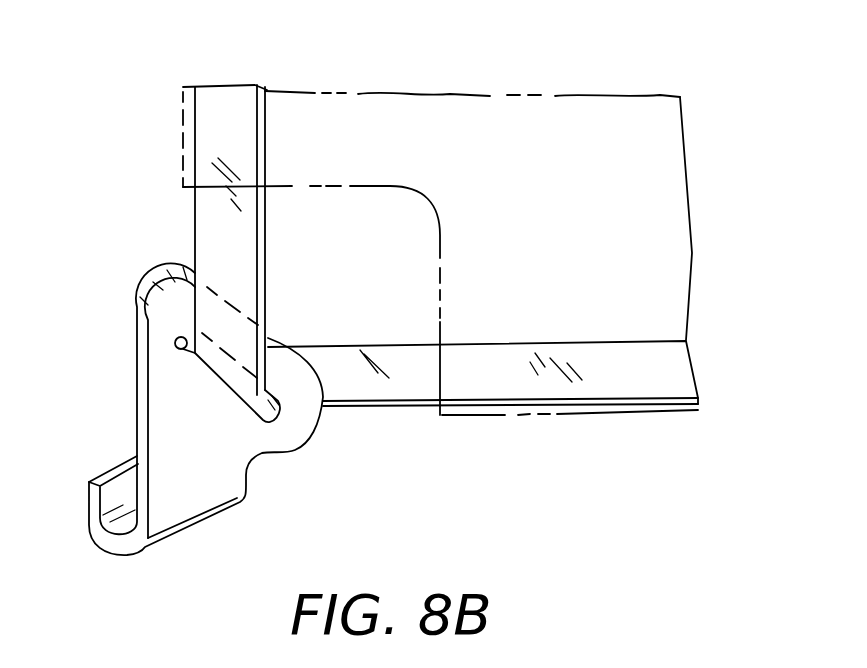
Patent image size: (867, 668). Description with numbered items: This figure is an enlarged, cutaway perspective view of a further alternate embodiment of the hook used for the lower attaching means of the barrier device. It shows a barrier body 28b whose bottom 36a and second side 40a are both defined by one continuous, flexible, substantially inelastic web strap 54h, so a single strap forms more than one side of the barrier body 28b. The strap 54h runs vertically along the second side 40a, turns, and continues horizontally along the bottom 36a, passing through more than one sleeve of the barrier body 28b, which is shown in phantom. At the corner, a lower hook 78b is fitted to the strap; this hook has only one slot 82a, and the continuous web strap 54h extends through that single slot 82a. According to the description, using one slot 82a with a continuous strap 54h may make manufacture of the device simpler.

The barrier body 28b is at (550, 123).
The bottom 36a is at (555, 432).
The web strap 54h is at (203, 207).
The lower hook 78b is at (217, 480).
The slot 82a is at (178, 350).
The second side 40a is at (146, 234).